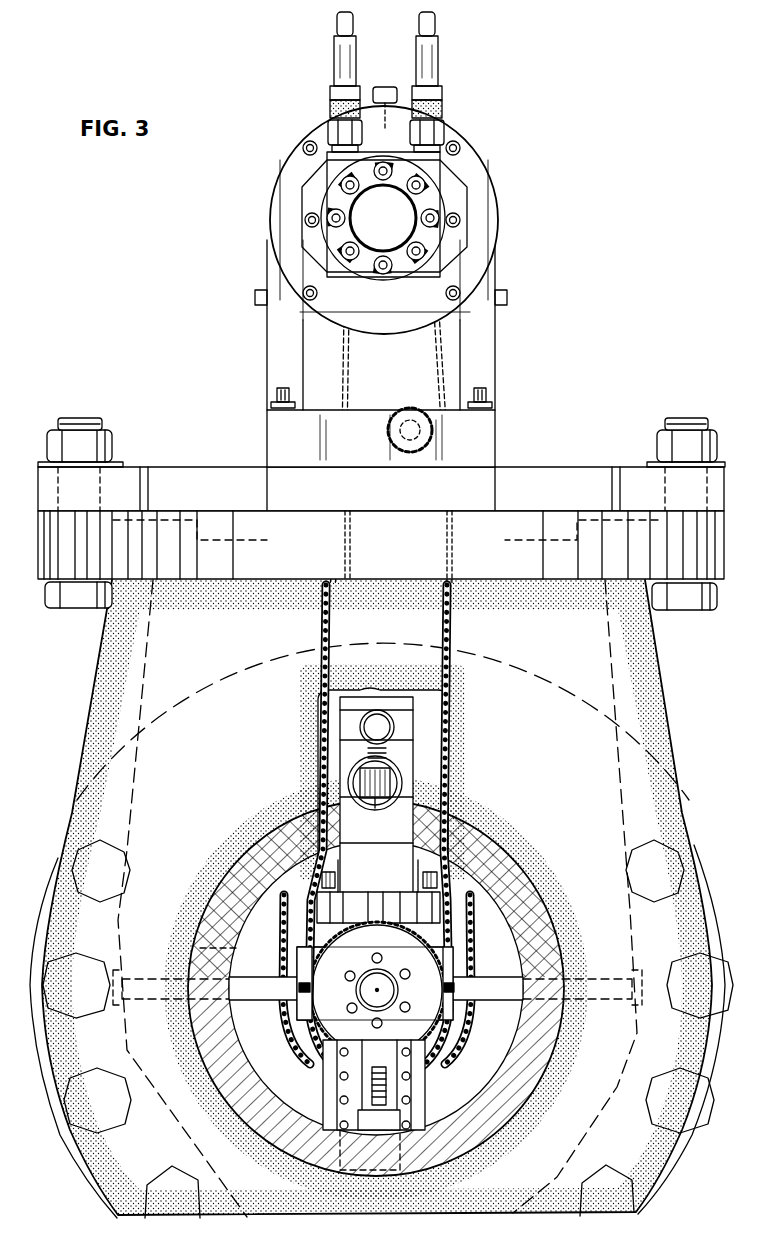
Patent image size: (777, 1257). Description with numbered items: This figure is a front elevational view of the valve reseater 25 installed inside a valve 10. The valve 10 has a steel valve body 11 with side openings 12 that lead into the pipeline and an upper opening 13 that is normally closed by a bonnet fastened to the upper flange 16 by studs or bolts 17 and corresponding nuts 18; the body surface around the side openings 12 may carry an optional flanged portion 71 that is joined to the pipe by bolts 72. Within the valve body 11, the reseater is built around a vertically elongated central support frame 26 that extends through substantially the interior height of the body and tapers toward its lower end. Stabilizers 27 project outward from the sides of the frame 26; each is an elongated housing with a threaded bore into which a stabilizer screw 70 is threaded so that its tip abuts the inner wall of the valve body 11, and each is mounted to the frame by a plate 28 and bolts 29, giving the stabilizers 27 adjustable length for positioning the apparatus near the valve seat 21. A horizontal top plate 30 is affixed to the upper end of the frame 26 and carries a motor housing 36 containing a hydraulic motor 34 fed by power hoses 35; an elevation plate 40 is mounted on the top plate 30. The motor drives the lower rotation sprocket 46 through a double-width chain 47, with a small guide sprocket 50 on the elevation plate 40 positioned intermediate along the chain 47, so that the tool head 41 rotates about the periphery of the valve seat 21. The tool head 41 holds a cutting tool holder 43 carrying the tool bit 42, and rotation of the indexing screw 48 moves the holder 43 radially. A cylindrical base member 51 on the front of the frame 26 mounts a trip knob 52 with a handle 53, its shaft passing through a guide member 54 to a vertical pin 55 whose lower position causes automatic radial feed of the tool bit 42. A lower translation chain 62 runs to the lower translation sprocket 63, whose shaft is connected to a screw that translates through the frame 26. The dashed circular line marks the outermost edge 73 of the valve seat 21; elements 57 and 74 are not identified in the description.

The valve 10 is at (96, 650).
The valve body 11 is at (96, 702).
The side openings 12 is at (498, 1082).
The upper opening 13 is at (582, 663).
The upper flange 16 is at (40, 540).
The studs or bolts 17 is at (94, 418).
The nuts 18 is at (106, 440).
The valve seat 21 is at (265, 1082).
The valve reseater 25 is at (558, 218).
The central support frame 26 is at (478, 628).
The stabilizers 27 is at (264, 1004).
The plate 28 is at (302, 985).
The bolts 29 is at (292, 1008).
The horizontal top plate 30 is at (544, 470).
The motor 34 is at (396, 233).
The power hoses 35 is at (336, 26).
The motor housing 36 is at (468, 154).
The elevation plate 40 is at (268, 438).
The tool head 41 is at (326, 1114).
The tool bit 42 is at (382, 1118).
The cutting tool holder 43 is at (402, 1124).
The lower rotation sprocket 46 is at (370, 918).
The double-width chain 47 is at (330, 868).
The indexing screw 48 is at (380, 1072).
The guide sprocket 50 is at (412, 460).
The cylindrical base member 51 is at (400, 777).
The trip knob 52 is at (386, 710).
The handle 53 is at (368, 712).
The guide member 54 is at (370, 794).
The vertical pin 55 is at (378, 804).
The bracket bolts 57 is at (338, 1080).
The lower translation chain 62 is at (280, 908).
The lower translation sprocket 63 is at (466, 930).
The stabilizer screw 70 is at (133, 975).
The flanged portion 71 is at (56, 892).
The bolts 72 is at (66, 1122).
The outermost edge 73 is at (235, 953).
The mounting bolts 74 is at (278, 388).